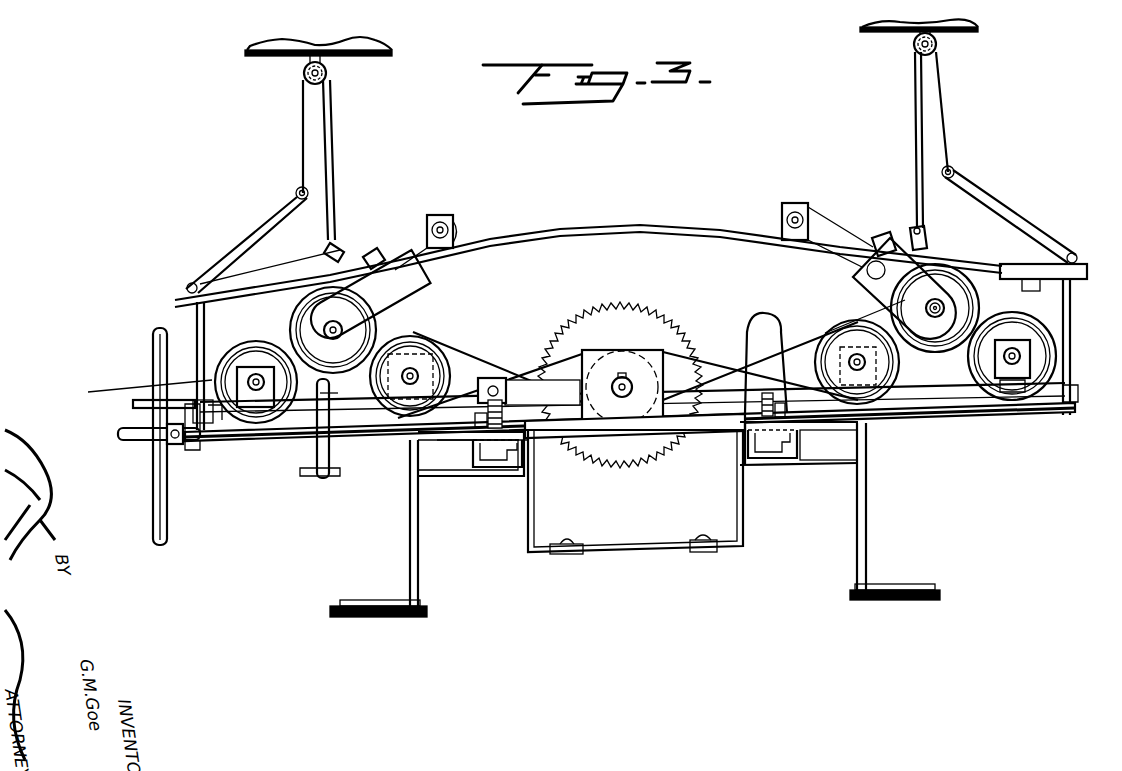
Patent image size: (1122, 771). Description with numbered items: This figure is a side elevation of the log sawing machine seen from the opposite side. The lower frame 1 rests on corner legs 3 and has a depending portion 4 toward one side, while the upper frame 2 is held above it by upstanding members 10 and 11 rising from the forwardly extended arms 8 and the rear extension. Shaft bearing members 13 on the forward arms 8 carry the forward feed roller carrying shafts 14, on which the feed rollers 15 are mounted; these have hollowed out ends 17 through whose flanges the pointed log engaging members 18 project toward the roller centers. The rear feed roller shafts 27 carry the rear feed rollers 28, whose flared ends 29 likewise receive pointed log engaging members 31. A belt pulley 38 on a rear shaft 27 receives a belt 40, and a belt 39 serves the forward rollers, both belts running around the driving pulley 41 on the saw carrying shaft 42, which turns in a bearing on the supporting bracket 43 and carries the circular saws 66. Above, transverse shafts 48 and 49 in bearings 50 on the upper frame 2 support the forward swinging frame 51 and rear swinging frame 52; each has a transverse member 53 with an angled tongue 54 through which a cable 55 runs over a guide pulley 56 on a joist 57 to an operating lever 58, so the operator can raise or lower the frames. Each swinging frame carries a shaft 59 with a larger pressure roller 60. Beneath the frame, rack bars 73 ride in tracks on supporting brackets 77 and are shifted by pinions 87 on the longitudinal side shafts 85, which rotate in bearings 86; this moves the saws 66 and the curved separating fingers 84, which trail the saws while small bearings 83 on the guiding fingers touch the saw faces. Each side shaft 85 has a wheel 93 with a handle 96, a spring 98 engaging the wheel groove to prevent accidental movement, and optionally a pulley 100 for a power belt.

The lower frame 1 is at (437, 441).
The upper frame 2 is at (267, 283).
The corner legs 3 is at (418, 582).
The depending portion 4 is at (742, 508).
The forwardly extended arms 8 is at (300, 440).
The upstanding members 10 is at (197, 343).
The upstanding members 11 is at (1070, 375).
The shaft bearing members 13 is at (257, 395).
The forward feed roller carrying shafts 14 is at (256, 340).
The feed rollers 15 is at (120, 389).
The hollowed out ends 17 is at (222, 403).
The pointed log engaging members 18 is at (256, 378).
The rear feed roller shafts 27 is at (1013, 387).
The rear feed rollers 28 is at (845, 327).
The flared ends 29 is at (1035, 373).
The pointed log engaging members 31 is at (957, 358).
The belt pulley 38 is at (856, 372).
The belt 39 is at (487, 376).
The belt 40 is at (712, 363).
The driving pulley 41 is at (683, 317).
The saw carrying shaft 42 is at (627, 377).
The supporting bracket 43 is at (580, 360).
The transverse shaft 48 is at (455, 232).
The transverse shaft 49 is at (778, 222).
The bearings 50 is at (455, 213).
The forward swinging frame 51 is at (400, 243).
The rear swinging frame 52 is at (832, 227).
The transverse member 53 is at (380, 253).
The tongue 54 is at (340, 246).
The cable 55 is at (338, 175).
The guide pulley 56 is at (313, 80).
The joist 57 is at (285, 52).
The operating lever 58 is at (233, 250).
The shaft 59 is at (942, 303).
The pressure roller 60 is at (303, 300).
The circular saws 66 is at (630, 452).
The rack bars 73 is at (503, 453).
The supporting brackets 77 is at (467, 480).
The small bearings 83 is at (557, 383).
The separating fingers 84 is at (763, 333).
The side shafts 85 is at (273, 430).
The bearings 86 is at (302, 480).
The pinions 87 is at (534, 448).
The wheel 93 is at (153, 478).
The handle 96 is at (143, 436).
The spring 98 is at (133, 405).
The pulleys 100 is at (340, 513).